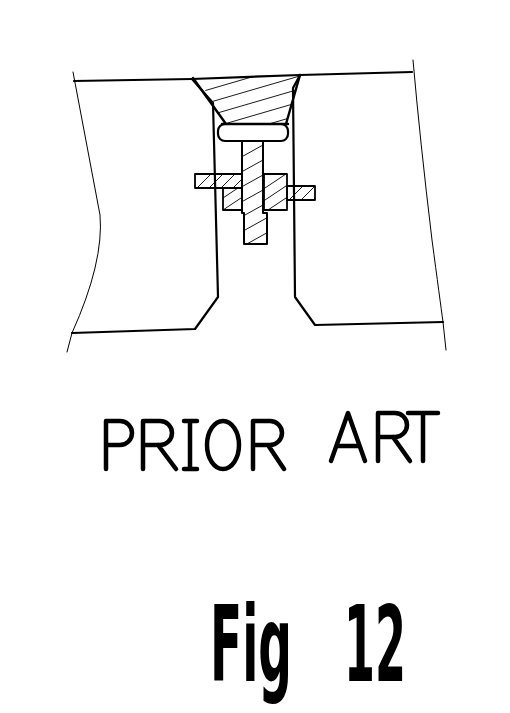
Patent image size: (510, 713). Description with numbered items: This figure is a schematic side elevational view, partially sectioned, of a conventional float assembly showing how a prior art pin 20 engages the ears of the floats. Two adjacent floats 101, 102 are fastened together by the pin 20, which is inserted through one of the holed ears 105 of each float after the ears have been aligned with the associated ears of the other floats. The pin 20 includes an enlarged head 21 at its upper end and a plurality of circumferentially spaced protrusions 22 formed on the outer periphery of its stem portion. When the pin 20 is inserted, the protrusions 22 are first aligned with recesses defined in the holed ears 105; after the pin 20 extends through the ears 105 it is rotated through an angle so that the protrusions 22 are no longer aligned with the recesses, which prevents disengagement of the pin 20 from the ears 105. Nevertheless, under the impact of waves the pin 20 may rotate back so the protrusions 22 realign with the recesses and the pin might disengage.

The float 101 is at (420, 213).
The float 102 is at (110, 150).
The holed ear 105 is at (313, 187).
The pin 20 is at (277, 144).
The enlarged head 21 is at (253, 82).
The protrusion 22 is at (272, 221).